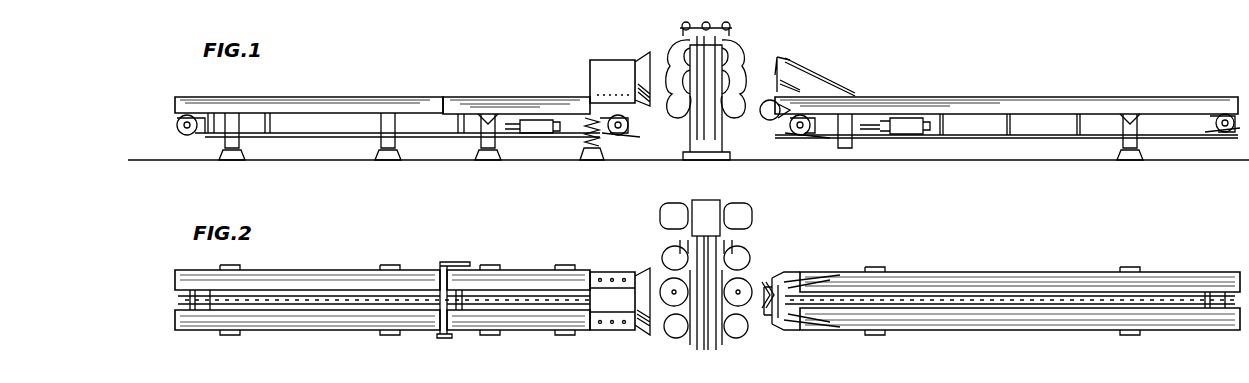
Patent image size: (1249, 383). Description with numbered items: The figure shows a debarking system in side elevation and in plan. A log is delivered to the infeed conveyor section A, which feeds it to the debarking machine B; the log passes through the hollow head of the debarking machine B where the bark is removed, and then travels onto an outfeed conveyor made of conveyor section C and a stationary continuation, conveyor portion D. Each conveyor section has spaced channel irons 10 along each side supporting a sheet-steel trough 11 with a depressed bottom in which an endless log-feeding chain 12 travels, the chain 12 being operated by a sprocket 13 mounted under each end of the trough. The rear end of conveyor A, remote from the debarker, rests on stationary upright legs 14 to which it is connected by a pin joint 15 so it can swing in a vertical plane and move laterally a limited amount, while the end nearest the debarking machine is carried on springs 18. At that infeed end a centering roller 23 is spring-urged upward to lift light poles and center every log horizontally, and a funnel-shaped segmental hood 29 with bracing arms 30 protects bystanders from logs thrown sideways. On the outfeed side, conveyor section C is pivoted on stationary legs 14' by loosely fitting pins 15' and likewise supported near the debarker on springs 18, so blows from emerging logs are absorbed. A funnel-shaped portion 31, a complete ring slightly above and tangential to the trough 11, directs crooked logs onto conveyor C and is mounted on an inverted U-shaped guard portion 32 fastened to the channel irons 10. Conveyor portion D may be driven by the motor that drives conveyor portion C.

In FIG. 1, the channel irons 10 is at (383, 97).
In FIG. 2, the channel irons 10 is at (370, 270).
In FIG. 2, the sheet-steel trough 11 is at (955, 282).
In FIG. 1, the endless log-feeding chain 12 is at (180, 129).
In FIG. 2, the endless log-feeding chain 12 is at (178, 299).
In FIG. 1, the sprocket 13 is at (620, 134).
In FIG. 1, the stationary upright legs 14 is at (1139, 137).
In FIG. 1, the stationary legs 14' is at (501, 137).
In FIG. 1, the pin joint 15 is at (1131, 100).
In FIG. 1, the loosely fitting pins 15' is at (490, 95).
In FIG. 1, the springs 18 is at (587, 146).
In FIG. 1, the centering roller 23 is at (770, 120).
In FIG. 2, the centering roller 23 is at (766, 310).
In FIG. 1, the segmental hood 29 is at (788, 58).
In FIG. 2, the segmental hood 29 is at (798, 272).
In FIG. 1, the bracing arms 30 is at (830, 80).
In FIG. 2, the bracing arms 30 is at (833, 274).
In FIG. 1, the funnel-shaped portion 31 is at (638, 55).
In FIG. 2, the funnel-shaped portion 31 is at (645, 274).
In FIG. 1, the inverted U-shaped guard portion 32 is at (620, 83).
In FIG. 2, the inverted U-shaped guard portion 32 is at (620, 307).
In FIG. 1, the conveyor section A is at (920, 91).
In FIG. 2, the conveyor section A is at (900, 265).
In FIG. 1, the debarking machine B is at (735, 50).
In FIG. 2, the debarking machine B is at (745, 262).
In FIG. 1, the conveyor section C is at (540, 91).
In FIG. 2, the conveyor section C is at (541, 265).
In FIG. 1, the conveyor portion D is at (341, 91).
In FIG. 2, the conveyor portion D is at (334, 264).